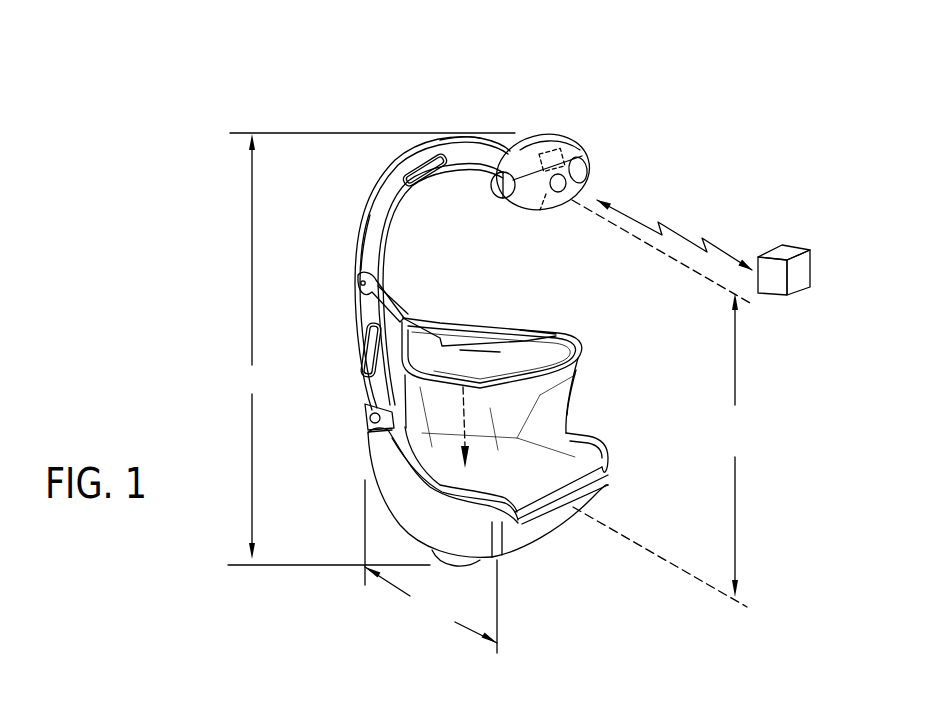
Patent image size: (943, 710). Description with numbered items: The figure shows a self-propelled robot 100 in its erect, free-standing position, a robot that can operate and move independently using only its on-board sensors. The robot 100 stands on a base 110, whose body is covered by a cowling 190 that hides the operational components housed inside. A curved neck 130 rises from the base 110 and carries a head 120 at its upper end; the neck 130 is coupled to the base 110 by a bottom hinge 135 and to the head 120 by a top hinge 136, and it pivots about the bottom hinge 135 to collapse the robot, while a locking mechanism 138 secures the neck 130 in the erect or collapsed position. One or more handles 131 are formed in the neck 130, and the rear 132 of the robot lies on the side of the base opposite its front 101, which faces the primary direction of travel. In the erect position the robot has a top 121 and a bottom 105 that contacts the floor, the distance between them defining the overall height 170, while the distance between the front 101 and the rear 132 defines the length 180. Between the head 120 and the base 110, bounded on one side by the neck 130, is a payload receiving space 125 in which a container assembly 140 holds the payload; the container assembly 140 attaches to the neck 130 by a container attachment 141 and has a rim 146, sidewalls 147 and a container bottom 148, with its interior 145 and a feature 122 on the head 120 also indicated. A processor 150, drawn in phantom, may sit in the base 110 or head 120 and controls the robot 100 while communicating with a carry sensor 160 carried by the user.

The self-propelled robot 100 is at (624, 63).
The front 101 is at (582, 497).
The bottom 105 is at (528, 545).
The base 110 is at (612, 450).
The head 120 is at (577, 147).
The top 121 is at (560, 132).
The lenses 122 is at (583, 177).
The payload receiving space 125 is at (663, 403).
The curved neck 130 is at (357, 265).
The handles 131 is at (420, 168).
The rear 132 is at (372, 207).
The bottom hinge 135 is at (368, 432).
The top hinge 136 is at (475, 157).
The locking mechanism 138 is at (370, 407).
The container assembly 140 is at (580, 347).
The container attachment 141 is at (370, 283).
The seat interior 145 is at (518, 350).
The rim 146 is at (543, 330).
The sidewalls 147 is at (578, 388).
The container bottom 148 is at (463, 387).
The processor 150 is at (537, 212).
The carry sensor 160 is at (798, 245).
The overall height 170 is at (371, 349).
The length 180 is at (431, 566).
The cowling 190 is at (375, 453).